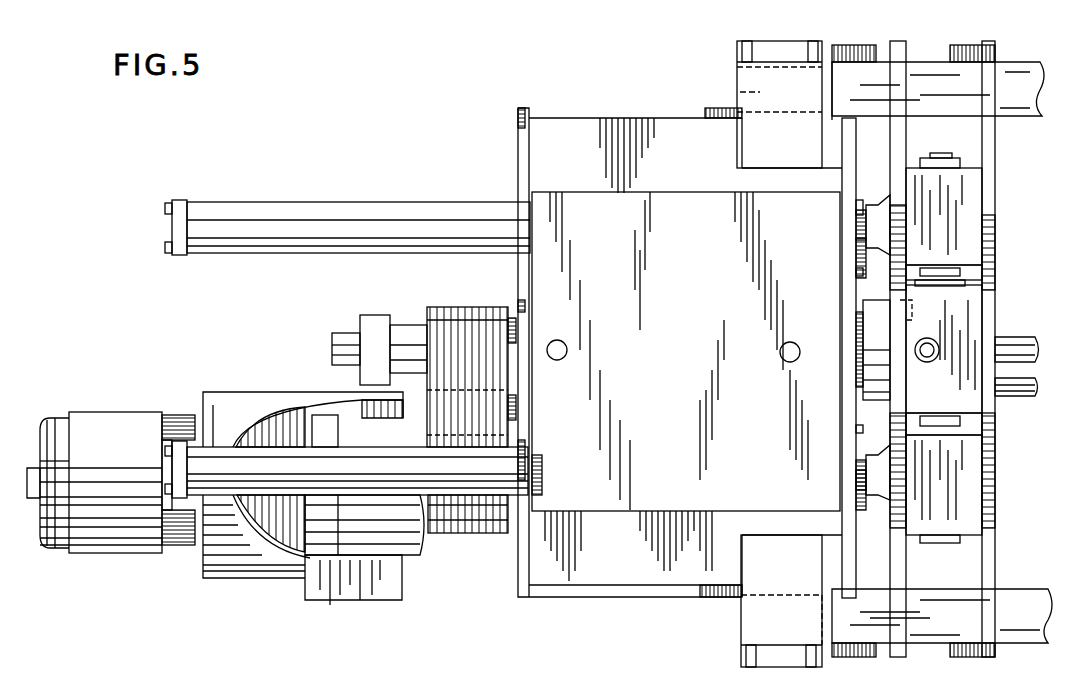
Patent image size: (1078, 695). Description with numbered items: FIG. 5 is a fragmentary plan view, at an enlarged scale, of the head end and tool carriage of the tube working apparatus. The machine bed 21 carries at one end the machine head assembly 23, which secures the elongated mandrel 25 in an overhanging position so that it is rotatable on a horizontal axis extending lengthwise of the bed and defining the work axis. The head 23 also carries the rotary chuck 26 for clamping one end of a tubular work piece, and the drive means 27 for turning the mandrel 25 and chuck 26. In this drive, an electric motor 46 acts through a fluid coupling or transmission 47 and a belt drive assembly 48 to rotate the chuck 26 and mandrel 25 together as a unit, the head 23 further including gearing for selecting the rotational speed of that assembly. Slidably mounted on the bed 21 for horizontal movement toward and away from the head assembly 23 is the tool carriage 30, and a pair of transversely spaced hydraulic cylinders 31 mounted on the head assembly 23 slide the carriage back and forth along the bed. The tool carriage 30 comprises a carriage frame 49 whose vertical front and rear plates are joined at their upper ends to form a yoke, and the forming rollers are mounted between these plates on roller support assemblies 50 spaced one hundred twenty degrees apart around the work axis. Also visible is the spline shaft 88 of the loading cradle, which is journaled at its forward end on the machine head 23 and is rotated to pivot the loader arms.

The machine bed 21 is at (1010, 82).
The machine head assembly 23 is at (478, 145).
The mandrel 25 is at (1022, 345).
The chuck 26 is at (878, 308).
The drive means 27 is at (195, 363).
The tool carriage 30 is at (1000, 170).
The hydraulic cylinders 31 is at (340, 210).
The electric motor 46 is at (95, 420).
The fluid coupling 47 is at (398, 538).
The belt drive assembly 48 is at (448, 317).
The carriage frame 49 is at (992, 516).
The roller support assembly 50 is at (967, 220).
The spline shaft 88 is at (1020, 390).